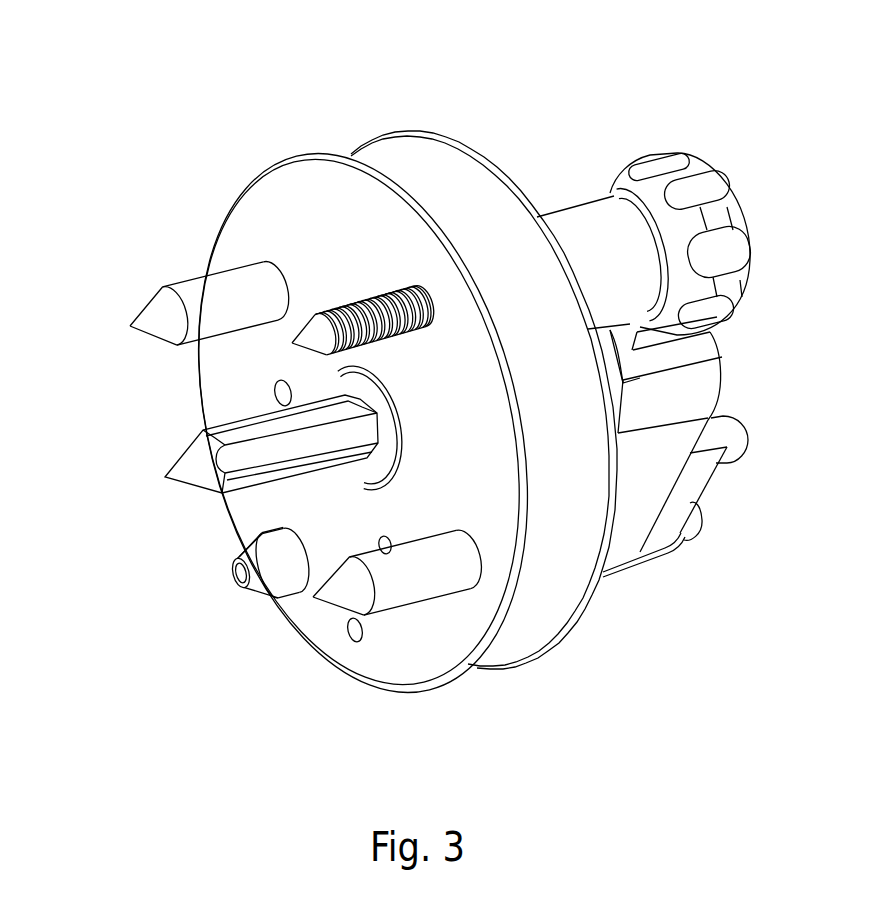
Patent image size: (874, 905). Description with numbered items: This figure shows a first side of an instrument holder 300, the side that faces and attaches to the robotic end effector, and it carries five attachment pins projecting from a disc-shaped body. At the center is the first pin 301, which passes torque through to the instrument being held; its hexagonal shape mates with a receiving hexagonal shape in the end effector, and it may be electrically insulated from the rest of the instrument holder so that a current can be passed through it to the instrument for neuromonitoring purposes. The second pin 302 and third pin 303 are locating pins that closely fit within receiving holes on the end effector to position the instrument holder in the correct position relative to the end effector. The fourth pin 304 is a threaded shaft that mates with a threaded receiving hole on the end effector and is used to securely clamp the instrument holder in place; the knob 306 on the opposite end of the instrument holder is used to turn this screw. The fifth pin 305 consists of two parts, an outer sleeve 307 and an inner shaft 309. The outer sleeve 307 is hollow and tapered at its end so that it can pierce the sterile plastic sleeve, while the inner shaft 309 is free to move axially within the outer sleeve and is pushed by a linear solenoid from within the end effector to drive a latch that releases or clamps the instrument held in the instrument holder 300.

The instrument holder 300 is at (864, 64).
The first pin 301 is at (192, 475).
The second pin 302 is at (153, 326).
The third pin 303 is at (350, 595).
The fourth pin 304 is at (360, 302).
The fifth pin 305 is at (260, 590).
The knob 306 is at (733, 247).
The outer sleeve 307 is at (271, 535).
The inner shaft 309 is at (238, 577).